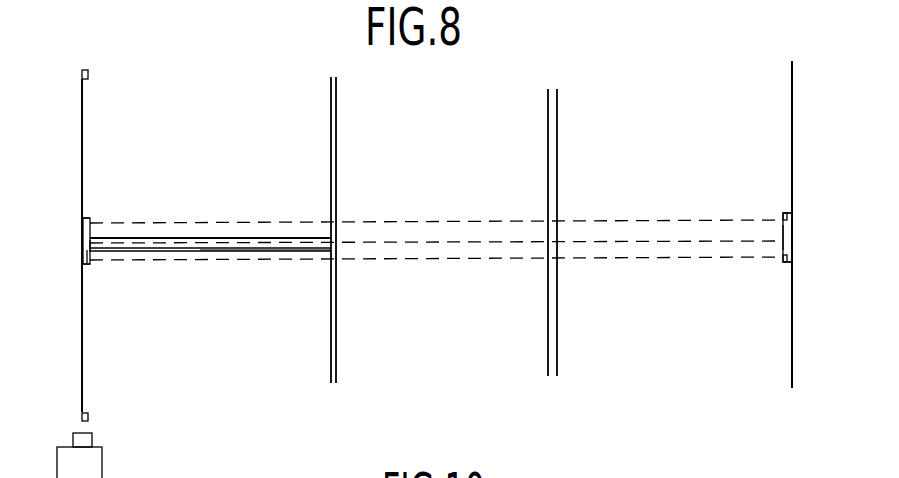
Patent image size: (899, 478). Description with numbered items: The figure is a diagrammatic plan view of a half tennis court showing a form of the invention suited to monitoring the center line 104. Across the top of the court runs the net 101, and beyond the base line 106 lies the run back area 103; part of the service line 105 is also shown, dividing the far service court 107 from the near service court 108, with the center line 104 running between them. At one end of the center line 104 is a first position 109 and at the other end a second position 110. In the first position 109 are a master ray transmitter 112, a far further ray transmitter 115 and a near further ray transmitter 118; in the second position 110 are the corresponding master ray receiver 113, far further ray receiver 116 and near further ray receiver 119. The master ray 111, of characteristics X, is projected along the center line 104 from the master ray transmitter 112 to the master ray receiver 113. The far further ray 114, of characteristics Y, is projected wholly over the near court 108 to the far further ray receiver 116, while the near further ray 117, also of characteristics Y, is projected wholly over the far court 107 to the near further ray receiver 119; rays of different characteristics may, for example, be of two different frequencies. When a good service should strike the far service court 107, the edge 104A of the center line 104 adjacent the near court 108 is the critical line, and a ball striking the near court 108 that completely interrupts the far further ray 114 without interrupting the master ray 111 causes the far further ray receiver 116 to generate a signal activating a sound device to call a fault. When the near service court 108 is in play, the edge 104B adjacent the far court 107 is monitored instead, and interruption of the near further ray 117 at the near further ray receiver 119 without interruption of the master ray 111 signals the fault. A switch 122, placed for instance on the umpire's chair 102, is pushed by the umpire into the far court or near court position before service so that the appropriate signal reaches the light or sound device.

The net 101 is at (92, 80).
The umpire's chair 102 is at (103, 462).
The run back area 103 is at (630, 134).
The center line 104 is at (229, 249).
The edge of the center line 104A is at (270, 251).
The edge of the center line 104B is at (230, 238).
The service line 105 is at (330, 149).
The base line 106 is at (557, 350).
The far service court 107 is at (210, 128).
The near service court 108 is at (212, 354).
The first position 109 is at (85, 237).
The second position 110 is at (800, 252).
The master ray 111 is at (375, 232).
The master ray transmitter 112 is at (94, 252).
The master ray receiver 113 is at (783, 238).
The far further ray 114 is at (435, 263).
The far further ray transmitter 115 is at (85, 259).
The far further ray receiver 116 is at (786, 258).
The near further ray 117 is at (448, 221).
The near further ray transmitter 118 is at (90, 221).
The near further ray receiver 119 is at (786, 214).
The switch 122 is at (92, 440).